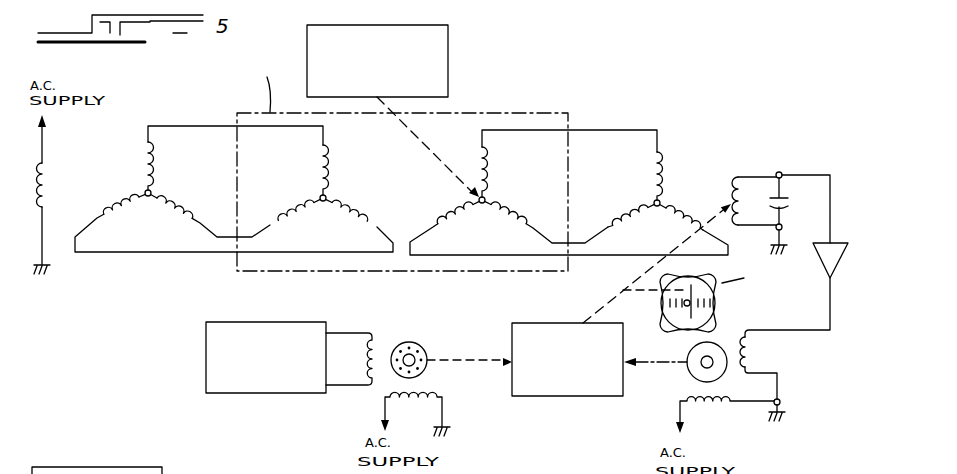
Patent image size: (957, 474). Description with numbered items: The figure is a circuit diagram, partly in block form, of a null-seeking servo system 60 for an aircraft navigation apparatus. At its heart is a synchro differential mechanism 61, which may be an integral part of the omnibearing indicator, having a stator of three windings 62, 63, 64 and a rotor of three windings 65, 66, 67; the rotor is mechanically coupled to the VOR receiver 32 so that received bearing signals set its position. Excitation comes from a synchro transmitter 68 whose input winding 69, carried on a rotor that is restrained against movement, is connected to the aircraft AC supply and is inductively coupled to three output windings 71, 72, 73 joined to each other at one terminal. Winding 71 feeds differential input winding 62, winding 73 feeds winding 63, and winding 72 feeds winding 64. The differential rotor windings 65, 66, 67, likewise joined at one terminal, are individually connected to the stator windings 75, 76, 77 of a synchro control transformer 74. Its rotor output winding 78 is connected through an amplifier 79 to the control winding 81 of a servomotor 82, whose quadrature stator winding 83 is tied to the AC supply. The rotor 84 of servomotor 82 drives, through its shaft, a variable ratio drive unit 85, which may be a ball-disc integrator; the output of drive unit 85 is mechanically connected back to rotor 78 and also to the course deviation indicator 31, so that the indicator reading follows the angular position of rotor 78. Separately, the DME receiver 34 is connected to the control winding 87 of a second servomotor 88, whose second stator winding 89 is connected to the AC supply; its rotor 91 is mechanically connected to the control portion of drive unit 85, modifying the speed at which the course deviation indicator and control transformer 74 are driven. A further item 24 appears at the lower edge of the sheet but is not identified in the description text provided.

The indicator 24 is at (291, 472).
The course deviation indicator 31 is at (720, 300).
The VOR receiver 32 is at (433, 25).
The DME receiver 34 is at (206, 362).
The system 60 is at (623, 112).
The synchro differential mechanism 61 is at (463, 113).
The stator winding 62 is at (344, 170).
The stator winding 63 is at (274, 211).
The stator winding 64 is at (367, 212).
The rotor winding 65 is at (488, 158).
The rotor winding 66 is at (453, 209).
The rotor winding 67 is at (535, 222).
The synchro transmitter 68 is at (110, 153).
The input winding 69 is at (50, 177).
The output winding 71 is at (153, 161).
The output winding 72 is at (123, 197).
The output winding 73 is at (203, 220).
The synchro control transformer 74 is at (718, 159).
The stator winding 75 is at (663, 181).
The stator winding 76 is at (713, 196).
The stator winding 77 is at (633, 213).
The rotor output winding 78 is at (730, 178).
The amplifier 79 is at (823, 262).
The control winding 81 is at (753, 358).
The servomotor 82 is at (684, 382).
The quadrature stator winding 83 is at (702, 406).
The rotor 84 is at (687, 371).
The variable ratio drive unit 85 is at (562, 396).
The control winding 87 is at (377, 342).
The second servomotor 88 is at (433, 349).
The second stator winding 89 is at (443, 402).
The rotor 91 is at (427, 366).